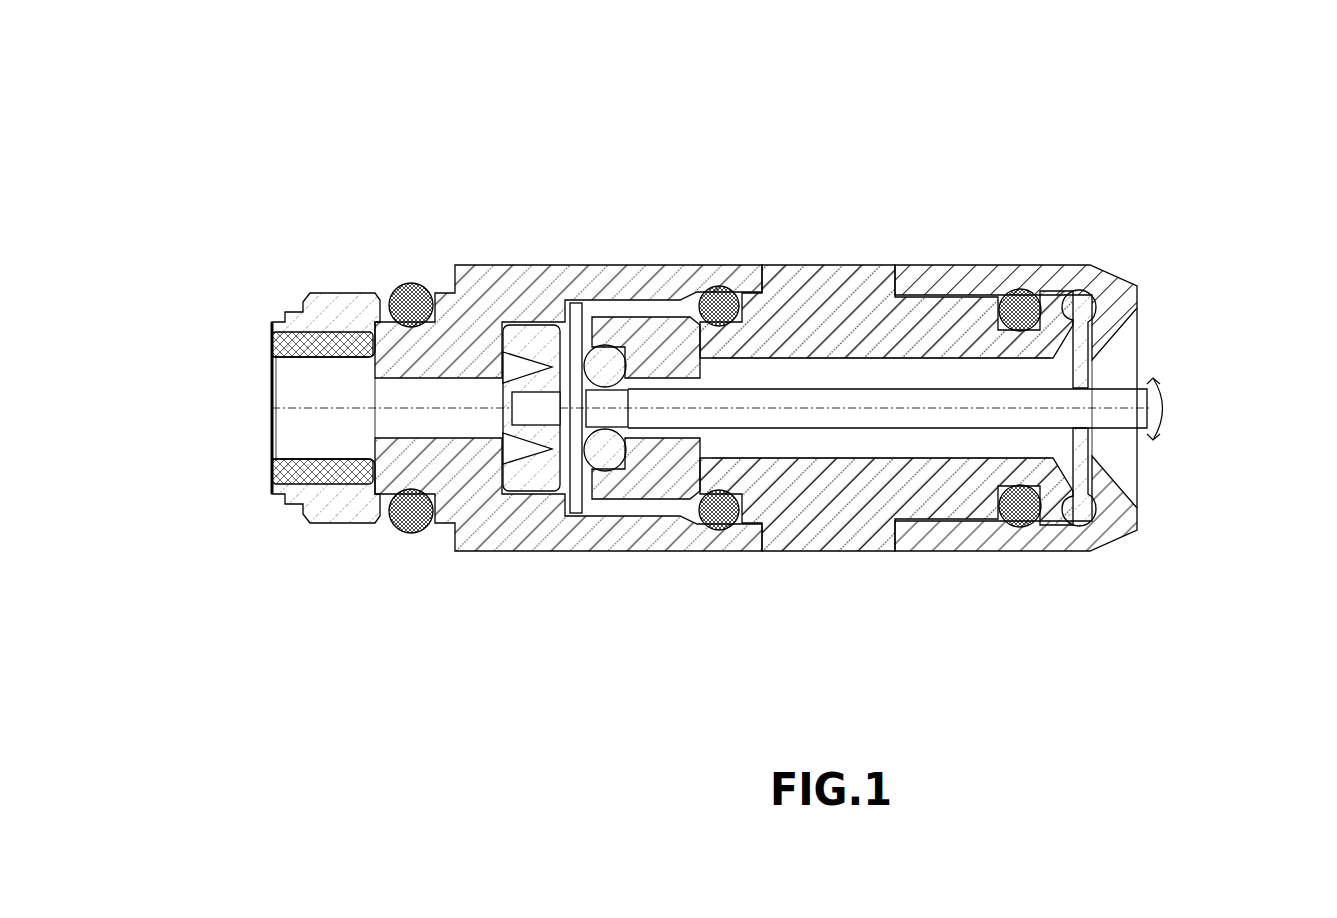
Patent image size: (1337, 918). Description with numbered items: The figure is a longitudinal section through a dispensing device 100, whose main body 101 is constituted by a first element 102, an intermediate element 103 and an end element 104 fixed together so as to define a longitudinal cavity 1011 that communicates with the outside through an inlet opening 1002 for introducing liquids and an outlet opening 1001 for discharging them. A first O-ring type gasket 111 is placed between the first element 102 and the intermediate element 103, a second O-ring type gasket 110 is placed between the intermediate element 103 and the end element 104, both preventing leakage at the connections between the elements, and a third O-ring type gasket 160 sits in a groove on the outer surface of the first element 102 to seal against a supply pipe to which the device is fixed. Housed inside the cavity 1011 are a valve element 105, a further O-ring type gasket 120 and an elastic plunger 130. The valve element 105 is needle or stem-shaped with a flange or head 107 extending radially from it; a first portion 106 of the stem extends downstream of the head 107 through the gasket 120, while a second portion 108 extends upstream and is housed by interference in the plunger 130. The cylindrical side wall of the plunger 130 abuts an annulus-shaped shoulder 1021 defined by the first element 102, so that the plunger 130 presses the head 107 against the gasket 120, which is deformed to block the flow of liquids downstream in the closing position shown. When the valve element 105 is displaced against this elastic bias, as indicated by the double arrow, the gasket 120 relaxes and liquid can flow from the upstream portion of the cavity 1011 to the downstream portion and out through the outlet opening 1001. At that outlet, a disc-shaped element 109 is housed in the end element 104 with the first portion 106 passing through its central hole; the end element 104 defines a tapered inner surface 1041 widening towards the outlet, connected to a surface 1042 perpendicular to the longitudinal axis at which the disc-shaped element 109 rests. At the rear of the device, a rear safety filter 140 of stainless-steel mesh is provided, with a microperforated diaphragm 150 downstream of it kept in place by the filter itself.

The dispensing device 100 is at (860, 50).
The main body 101 is at (838, 325).
The first element 102 is at (547, 287).
The intermediate element 103 is at (818, 300).
The end element 104 is at (1098, 372).
The valve element 105 is at (954, 529).
The first portion of the stem 106 is at (967, 420).
The flange or head 107 is at (577, 447).
The second portion of the stem 108 is at (517, 429).
The disc-shaped element 109 is at (1087, 480).
The second O-ring type gasket 110 is at (1025, 520).
The first O-ring type gasket 111 is at (722, 525).
The O-ring type gasket 120 is at (603, 352).
The plunger 130 is at (517, 429).
The rear safety filter 140 is at (278, 475).
The microperforated diaphragm 150 is at (370, 432).
The third O-ring type gasket 160 is at (411, 283).
The outlet opening 1001 is at (1127, 368).
The inlet opening 1002 is at (310, 384).
The longitudinal cavity 1011 is at (922, 375).
The annulus-shaped shoulder 1021 is at (513, 342).
The tapered inner surface 1041 is at (1135, 338).
The perpendicular surface 1042 is at (1120, 300).